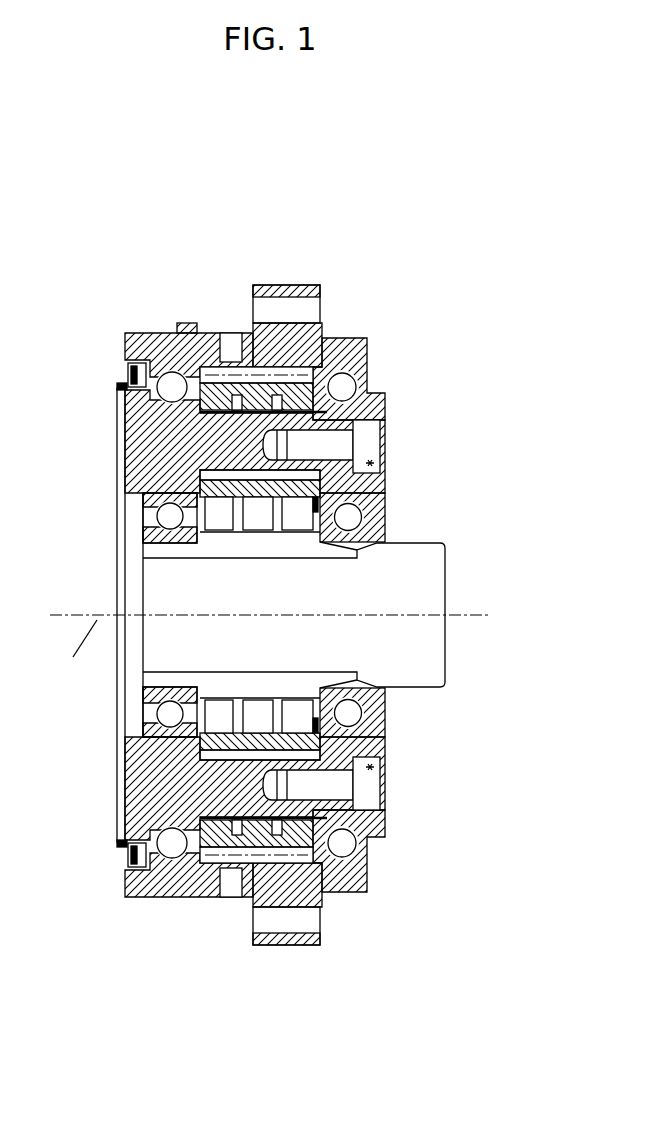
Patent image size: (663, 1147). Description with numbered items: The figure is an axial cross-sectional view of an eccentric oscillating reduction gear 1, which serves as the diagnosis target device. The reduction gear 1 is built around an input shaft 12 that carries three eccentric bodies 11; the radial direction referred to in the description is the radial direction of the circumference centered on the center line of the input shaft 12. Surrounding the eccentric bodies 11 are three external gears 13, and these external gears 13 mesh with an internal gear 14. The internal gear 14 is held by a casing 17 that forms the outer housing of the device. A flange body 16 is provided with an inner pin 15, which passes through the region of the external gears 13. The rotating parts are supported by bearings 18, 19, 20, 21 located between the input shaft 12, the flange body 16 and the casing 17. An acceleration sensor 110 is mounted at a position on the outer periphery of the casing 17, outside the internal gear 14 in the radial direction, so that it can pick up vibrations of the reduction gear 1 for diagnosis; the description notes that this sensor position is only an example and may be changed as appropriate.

The eccentric oscillating reduction gear 1 is at (358, 205).
The eccentric bodies 11 is at (300, 530).
The input shaft 12 is at (433, 545).
The external gears 13 is at (298, 843).
The internal gear 14 is at (268, 370).
The inner pin 15 is at (225, 423).
The flange body 16 is at (128, 442).
The casing 17 is at (137, 333).
The bearing 18 is at (148, 533).
The bearing 19 is at (370, 532).
The bearing 20 is at (180, 858).
The bearing 21 is at (355, 863).
The acceleration sensor 110 is at (187, 322).